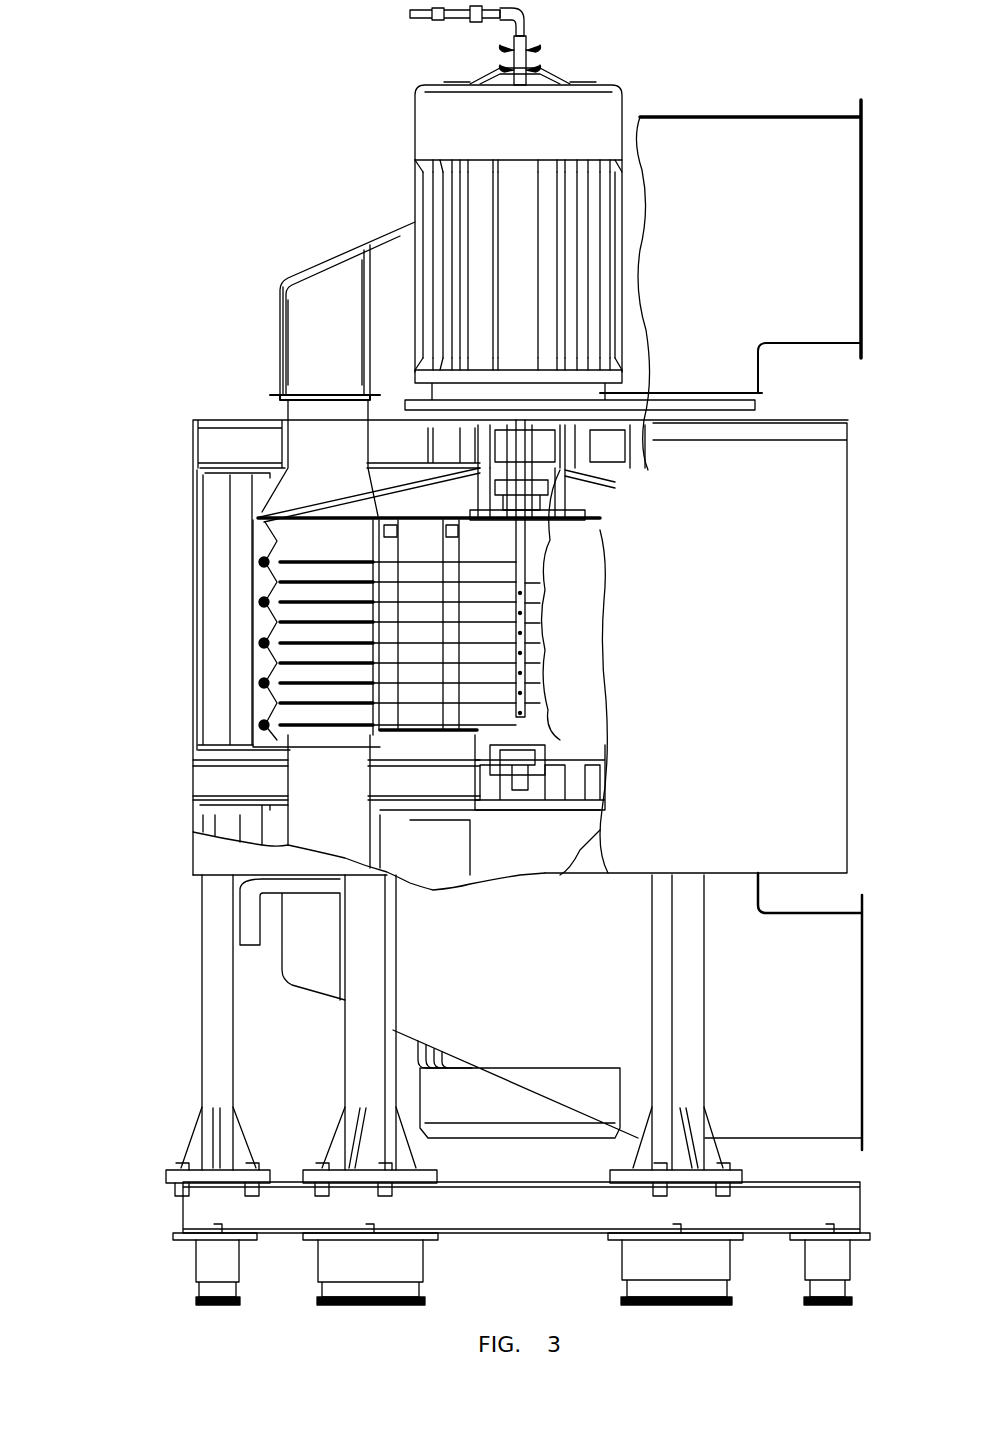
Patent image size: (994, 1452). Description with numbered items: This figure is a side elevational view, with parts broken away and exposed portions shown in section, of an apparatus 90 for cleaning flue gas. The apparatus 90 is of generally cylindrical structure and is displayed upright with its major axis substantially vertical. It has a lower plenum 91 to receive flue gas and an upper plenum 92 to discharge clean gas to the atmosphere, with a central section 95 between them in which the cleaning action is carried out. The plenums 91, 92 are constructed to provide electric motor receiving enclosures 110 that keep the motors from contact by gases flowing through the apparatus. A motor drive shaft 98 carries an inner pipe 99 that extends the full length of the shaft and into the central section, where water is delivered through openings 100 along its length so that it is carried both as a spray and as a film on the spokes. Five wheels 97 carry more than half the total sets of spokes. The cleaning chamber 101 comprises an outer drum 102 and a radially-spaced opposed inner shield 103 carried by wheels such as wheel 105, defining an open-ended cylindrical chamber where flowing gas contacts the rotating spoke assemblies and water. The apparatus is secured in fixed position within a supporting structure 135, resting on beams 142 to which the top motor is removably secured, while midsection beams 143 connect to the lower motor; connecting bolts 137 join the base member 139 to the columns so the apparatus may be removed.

The apparatus 90 is at (272, 297).
The lower plenum 91 is at (310, 1003).
The upper plenum 92 is at (352, 247).
The central section 95 is at (260, 708).
The wheels 97 is at (537, 602).
The motor drive shaft 98 is at (540, 462).
The inner pipe 99 is at (528, 642).
The openings 100 is at (537, 673).
The cleaning chamber 101 is at (258, 555).
The outer drum 102 is at (250, 630).
The inner shield 103 is at (250, 670).
The wheel 105 is at (575, 710).
The electric motor receiving enclosure 110 is at (365, 325).
The supporting structure 135 is at (197, 978).
The connecting bolts 137 is at (170, 1165).
The base member 139 is at (190, 1215).
The beams 142 is at (195, 420).
The midsection beams 143 is at (210, 787).